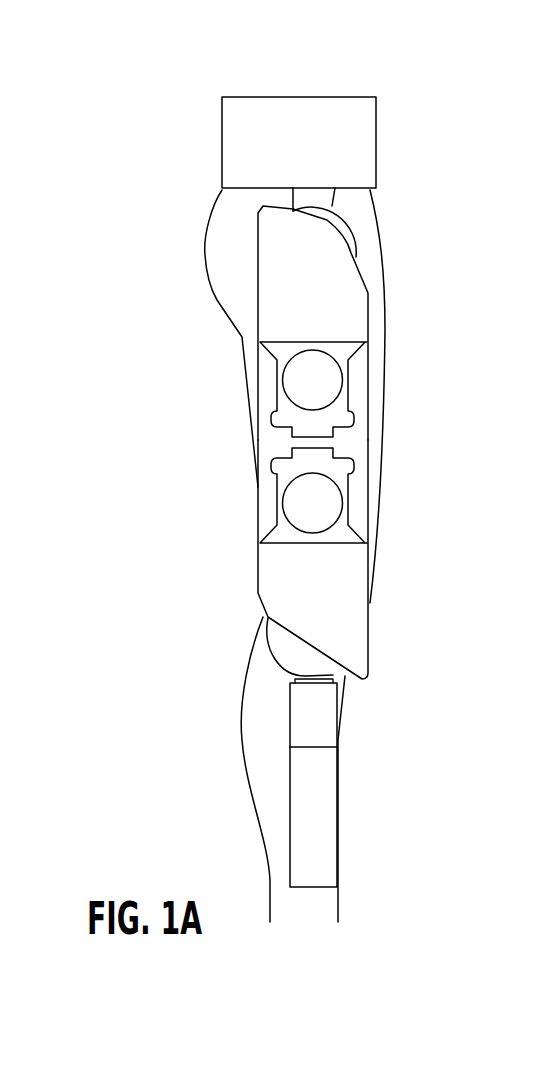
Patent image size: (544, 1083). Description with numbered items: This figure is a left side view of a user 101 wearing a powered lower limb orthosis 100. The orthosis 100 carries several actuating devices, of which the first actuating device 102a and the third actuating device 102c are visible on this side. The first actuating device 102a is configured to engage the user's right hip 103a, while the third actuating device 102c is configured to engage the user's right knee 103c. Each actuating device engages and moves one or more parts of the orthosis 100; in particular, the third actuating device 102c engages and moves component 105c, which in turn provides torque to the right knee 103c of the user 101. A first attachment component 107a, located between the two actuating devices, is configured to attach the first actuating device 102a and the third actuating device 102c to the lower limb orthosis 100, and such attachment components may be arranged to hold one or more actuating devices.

The lower limb orthosis 100 is at (233, 238).
The user 101 is at (381, 32).
The first actuating device 102a is at (419, 305).
The third actuating device 102c is at (407, 610).
The right hip 103a is at (408, 170).
The right knee 103c is at (245, 631).
The component 105c is at (315, 800).
The first attachment component 107a is at (350, 445).